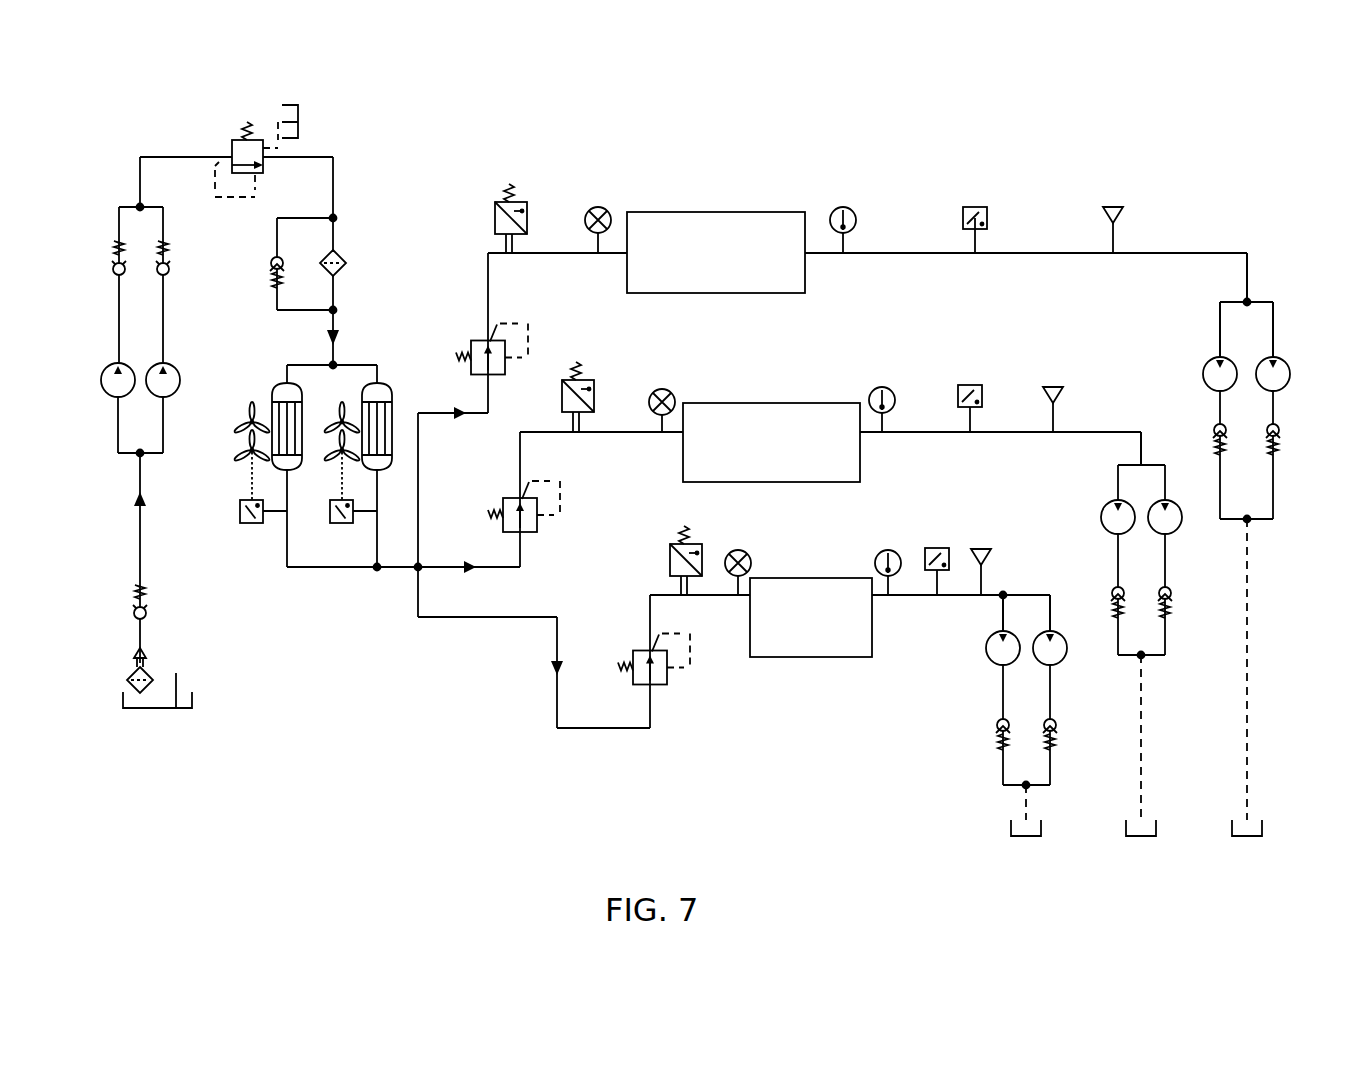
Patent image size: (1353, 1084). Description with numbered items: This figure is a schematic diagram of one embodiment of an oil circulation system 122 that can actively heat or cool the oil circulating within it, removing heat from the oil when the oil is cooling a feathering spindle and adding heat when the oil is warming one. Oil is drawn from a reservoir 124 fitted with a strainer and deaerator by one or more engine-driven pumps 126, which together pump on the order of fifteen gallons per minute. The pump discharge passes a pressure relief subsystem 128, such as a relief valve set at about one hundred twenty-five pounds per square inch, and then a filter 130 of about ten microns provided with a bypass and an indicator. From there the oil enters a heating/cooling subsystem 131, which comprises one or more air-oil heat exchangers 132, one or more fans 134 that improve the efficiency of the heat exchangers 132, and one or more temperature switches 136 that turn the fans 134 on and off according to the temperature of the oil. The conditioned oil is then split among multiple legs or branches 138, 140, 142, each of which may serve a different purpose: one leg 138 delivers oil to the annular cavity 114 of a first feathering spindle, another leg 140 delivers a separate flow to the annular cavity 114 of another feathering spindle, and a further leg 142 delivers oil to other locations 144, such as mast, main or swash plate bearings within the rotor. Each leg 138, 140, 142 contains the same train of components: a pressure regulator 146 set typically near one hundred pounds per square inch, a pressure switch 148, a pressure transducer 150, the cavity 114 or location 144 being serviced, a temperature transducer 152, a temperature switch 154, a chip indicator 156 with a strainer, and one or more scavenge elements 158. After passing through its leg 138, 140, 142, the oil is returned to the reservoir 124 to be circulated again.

The annular cavity 114 is at (712, 205).
The oil circulation system 122 is at (1152, 135).
The reservoir 124 is at (152, 716).
The pumps 126 is at (106, 360).
The pressure relief subsystem 128 is at (233, 127).
The filter 130 is at (347, 243).
The heating/cooling subsystem 131 is at (358, 358).
The heat exchangers 132 is at (237, 455).
The fans 134 is at (236, 426).
The temperature switches 136 is at (241, 522).
The leg 138 is at (1230, 230).
The leg 140 is at (1012, 372).
The leg 142 is at (966, 542).
The other locations 144 is at (818, 562).
The pressure regulator 146 is at (538, 335).
The pressure switch 148 is at (522, 195).
The pressure transducer 150 is at (607, 203).
The temperature transducer 152 is at (855, 205).
The temperature switch 154 is at (983, 205).
The chip indicator 156 is at (1122, 205).
The scavenge elements 158 is at (1292, 353).